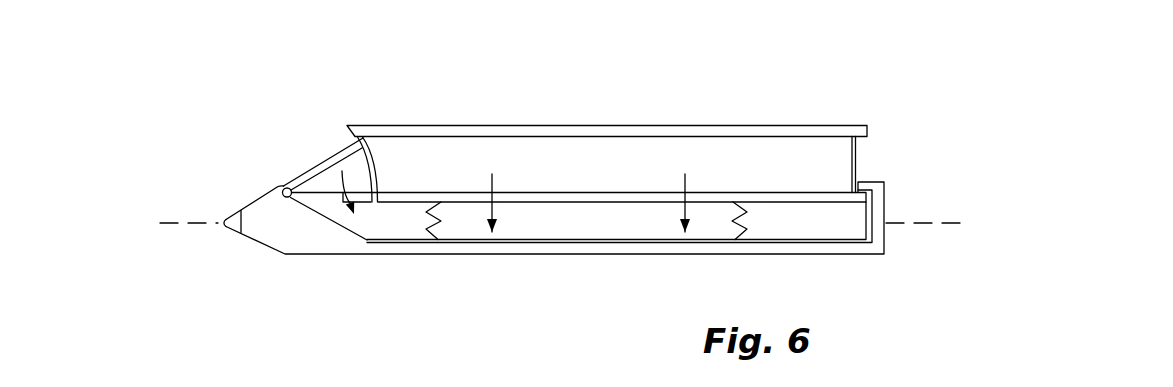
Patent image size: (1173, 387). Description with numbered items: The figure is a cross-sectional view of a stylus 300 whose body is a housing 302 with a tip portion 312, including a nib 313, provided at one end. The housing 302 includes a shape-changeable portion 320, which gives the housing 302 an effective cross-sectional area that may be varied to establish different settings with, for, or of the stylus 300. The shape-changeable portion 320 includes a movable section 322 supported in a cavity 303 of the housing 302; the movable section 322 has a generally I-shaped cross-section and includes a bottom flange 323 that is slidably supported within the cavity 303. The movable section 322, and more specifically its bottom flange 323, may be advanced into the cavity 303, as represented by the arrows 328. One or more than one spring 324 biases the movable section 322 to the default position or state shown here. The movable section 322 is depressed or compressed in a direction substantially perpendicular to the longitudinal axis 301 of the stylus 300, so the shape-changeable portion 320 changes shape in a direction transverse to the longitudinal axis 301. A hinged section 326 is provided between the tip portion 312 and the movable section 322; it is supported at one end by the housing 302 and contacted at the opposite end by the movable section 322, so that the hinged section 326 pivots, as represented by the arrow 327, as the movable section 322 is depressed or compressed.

The stylus 300 is at (338, 87).
The longitudinal axis 301 is at (945, 223).
The housing 302 is at (675, 103).
The cavity 303 is at (510, 225).
The tip portion 312 is at (245, 193).
The nib 313 is at (233, 222).
The shape-changeable portion 320 is at (518, 112).
The movable section 322 is at (593, 132).
The bottom flange 323 is at (592, 196).
The spring 324 is at (428, 221).
The hinged section 326 is at (327, 160).
The arrow 327 is at (350, 182).
The arrows 328 is at (588, 192).